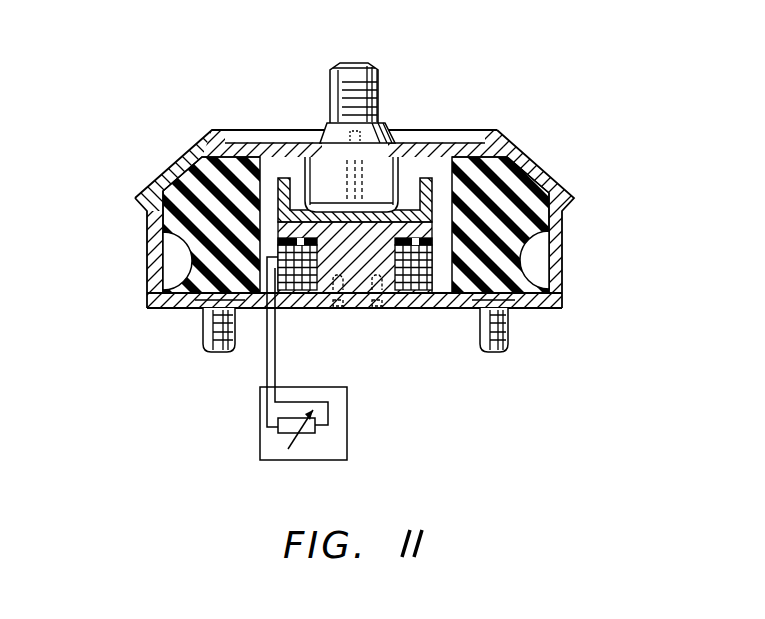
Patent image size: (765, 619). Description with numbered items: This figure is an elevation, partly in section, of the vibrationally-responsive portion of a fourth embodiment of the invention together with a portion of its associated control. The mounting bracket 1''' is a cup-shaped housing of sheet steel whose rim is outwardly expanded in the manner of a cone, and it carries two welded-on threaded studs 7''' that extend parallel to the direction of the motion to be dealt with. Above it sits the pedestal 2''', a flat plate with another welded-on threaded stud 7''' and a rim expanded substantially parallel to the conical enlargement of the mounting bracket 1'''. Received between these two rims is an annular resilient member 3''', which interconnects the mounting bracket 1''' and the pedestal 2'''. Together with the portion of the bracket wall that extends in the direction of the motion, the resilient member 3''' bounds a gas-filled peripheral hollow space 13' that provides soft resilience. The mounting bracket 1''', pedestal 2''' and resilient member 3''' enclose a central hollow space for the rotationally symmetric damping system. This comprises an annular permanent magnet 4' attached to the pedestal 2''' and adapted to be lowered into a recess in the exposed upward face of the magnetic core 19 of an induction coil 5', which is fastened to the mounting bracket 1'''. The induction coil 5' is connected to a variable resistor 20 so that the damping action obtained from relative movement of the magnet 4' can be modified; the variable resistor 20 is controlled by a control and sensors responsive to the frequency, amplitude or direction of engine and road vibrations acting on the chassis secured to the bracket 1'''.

The mounting bracket 1''' is at (354, 326).
The pedestal 2''' is at (321, 185).
The annular resilient member 3''' is at (522, 195).
The annular permanent magnet 4' is at (359, 182).
The induction coil 5' is at (355, 302).
The threaded stud 7''' is at (363, 195).
The peripheral hollow space 13' is at (401, 225).
The magnetic core 19 is at (405, 167).
The variable resistor 20 is at (265, 442).